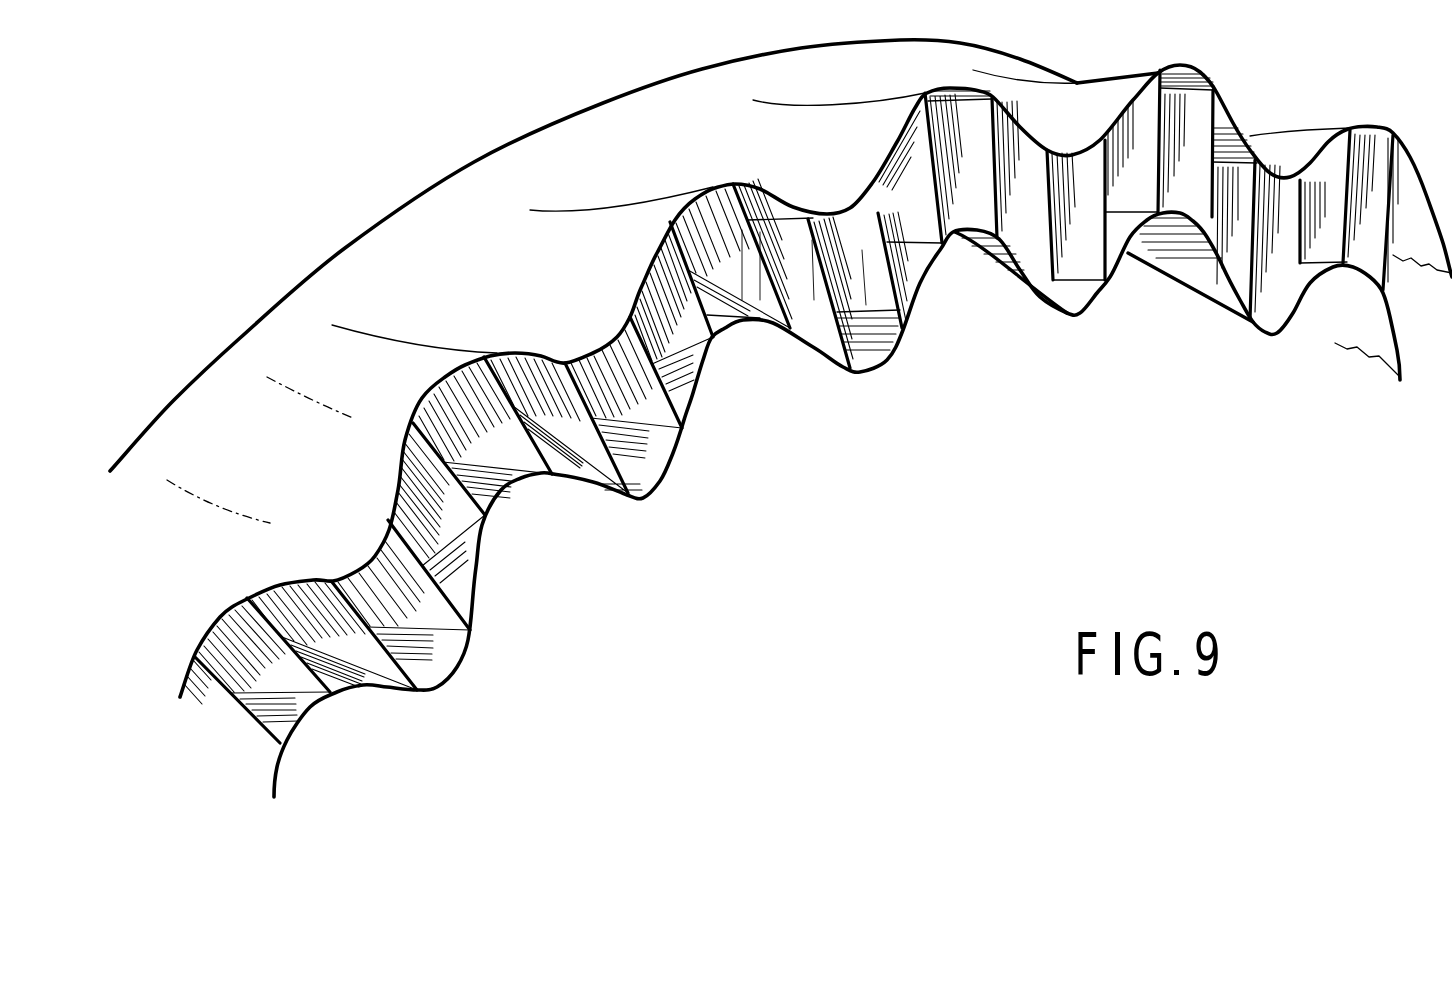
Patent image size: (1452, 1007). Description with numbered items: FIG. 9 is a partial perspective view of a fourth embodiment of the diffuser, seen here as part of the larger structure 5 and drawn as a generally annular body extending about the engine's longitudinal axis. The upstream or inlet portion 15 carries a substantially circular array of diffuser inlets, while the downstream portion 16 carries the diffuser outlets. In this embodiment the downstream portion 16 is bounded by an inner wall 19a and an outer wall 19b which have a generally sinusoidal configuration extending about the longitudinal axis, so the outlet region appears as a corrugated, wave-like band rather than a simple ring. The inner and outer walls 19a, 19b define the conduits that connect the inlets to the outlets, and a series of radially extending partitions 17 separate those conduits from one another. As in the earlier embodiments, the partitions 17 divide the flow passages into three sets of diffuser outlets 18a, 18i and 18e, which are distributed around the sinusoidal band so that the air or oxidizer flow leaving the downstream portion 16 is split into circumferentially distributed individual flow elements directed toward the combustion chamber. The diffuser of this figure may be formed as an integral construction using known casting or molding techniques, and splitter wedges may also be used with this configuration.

The tubular body 5 is at (593, 281).
The inlet portion 15 is at (363, 271).
The downstream portion 16 is at (816, 424).
The partitions 17 is at (880, 233).
The diffuser outlets 18e is at (747, 300).
The diffuser outlets 18a is at (817, 330).
The diffuser outlets 18i is at (873, 327).
The inner wall 19a is at (477, 552).
The outer wall 19b is at (393, 496).